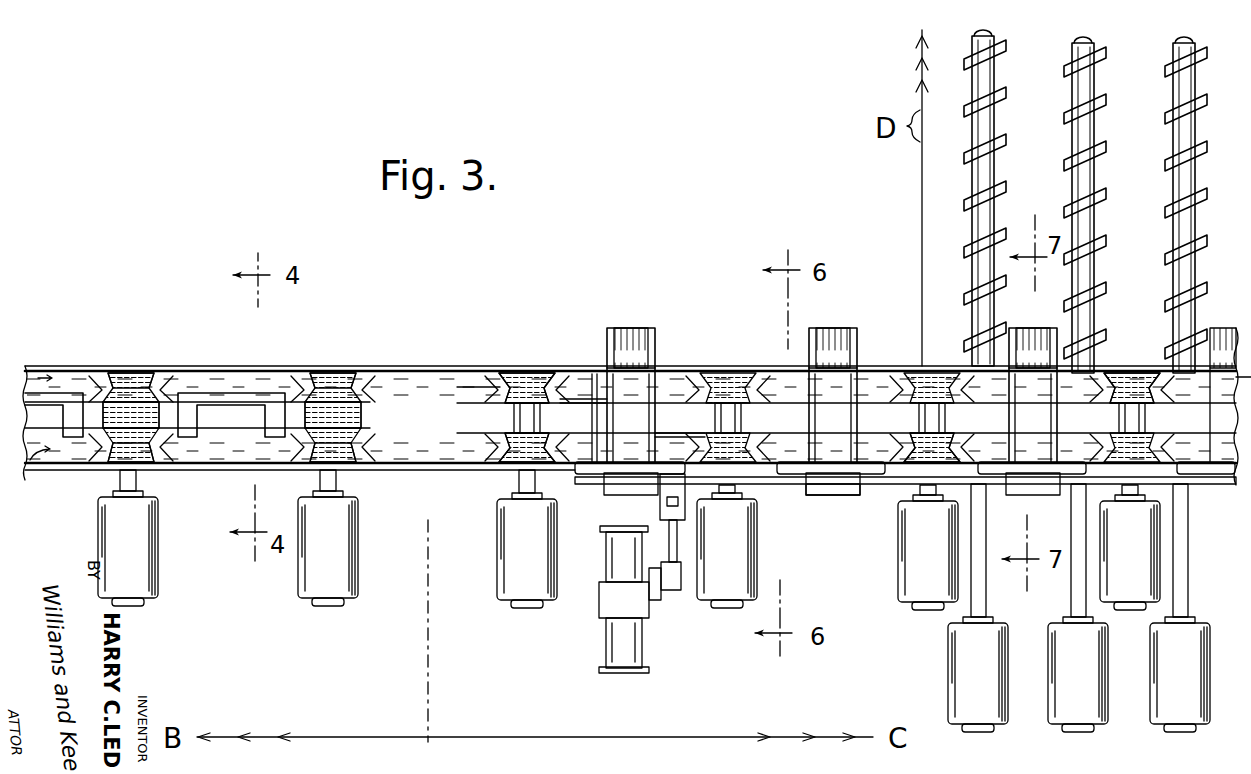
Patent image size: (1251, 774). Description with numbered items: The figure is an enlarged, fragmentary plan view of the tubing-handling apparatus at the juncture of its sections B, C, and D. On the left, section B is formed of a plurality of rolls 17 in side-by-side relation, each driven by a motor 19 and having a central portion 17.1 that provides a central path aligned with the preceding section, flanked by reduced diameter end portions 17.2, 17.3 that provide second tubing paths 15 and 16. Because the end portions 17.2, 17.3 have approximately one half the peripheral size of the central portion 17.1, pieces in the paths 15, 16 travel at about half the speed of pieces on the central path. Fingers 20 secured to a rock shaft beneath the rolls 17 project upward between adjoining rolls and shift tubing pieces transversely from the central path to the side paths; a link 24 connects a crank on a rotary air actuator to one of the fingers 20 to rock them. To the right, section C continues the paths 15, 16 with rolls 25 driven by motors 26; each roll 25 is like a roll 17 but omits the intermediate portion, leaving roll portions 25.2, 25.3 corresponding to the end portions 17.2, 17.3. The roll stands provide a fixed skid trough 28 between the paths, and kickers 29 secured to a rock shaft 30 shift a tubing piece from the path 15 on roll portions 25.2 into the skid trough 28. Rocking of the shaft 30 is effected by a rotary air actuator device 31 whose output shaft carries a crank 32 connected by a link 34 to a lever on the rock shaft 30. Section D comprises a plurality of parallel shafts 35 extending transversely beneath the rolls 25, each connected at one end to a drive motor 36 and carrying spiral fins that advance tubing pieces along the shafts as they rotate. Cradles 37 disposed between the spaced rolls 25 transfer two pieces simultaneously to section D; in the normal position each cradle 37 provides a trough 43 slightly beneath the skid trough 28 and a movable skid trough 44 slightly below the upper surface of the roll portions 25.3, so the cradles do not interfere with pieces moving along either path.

The second tubing path 15 is at (25, 470).
The second tubing path 16 is at (30, 366).
The roll 17 is at (160, 397).
The central roll portion 17.1 is at (135, 412).
The reduced diameter end portion 17.2 is at (143, 433).
The reduced diameter end portion 17.3 is at (134, 378).
The motor 19 is at (145, 566).
The finger 20 is at (60, 400).
The link 24 is at (623, 462).
The roll 25 is at (509, 418).
The roll portion 25.2 is at (517, 462).
The roll portion 25.3 is at (530, 388).
The motor 26 is at (513, 573).
The skid trough 28 is at (580, 440).
The kicker 29 is at (842, 474).
The rock shaft 30 is at (892, 488).
The rotary air actuator device 31 is at (602, 651).
The crank 32 is at (655, 598).
The link 34 is at (675, 535).
The shaft 35 is at (1000, 155).
The drive motor 36 is at (965, 675).
The cradle 37 is at (630, 358).
The trough 43 is at (636, 424).
The trough 44 is at (603, 398).